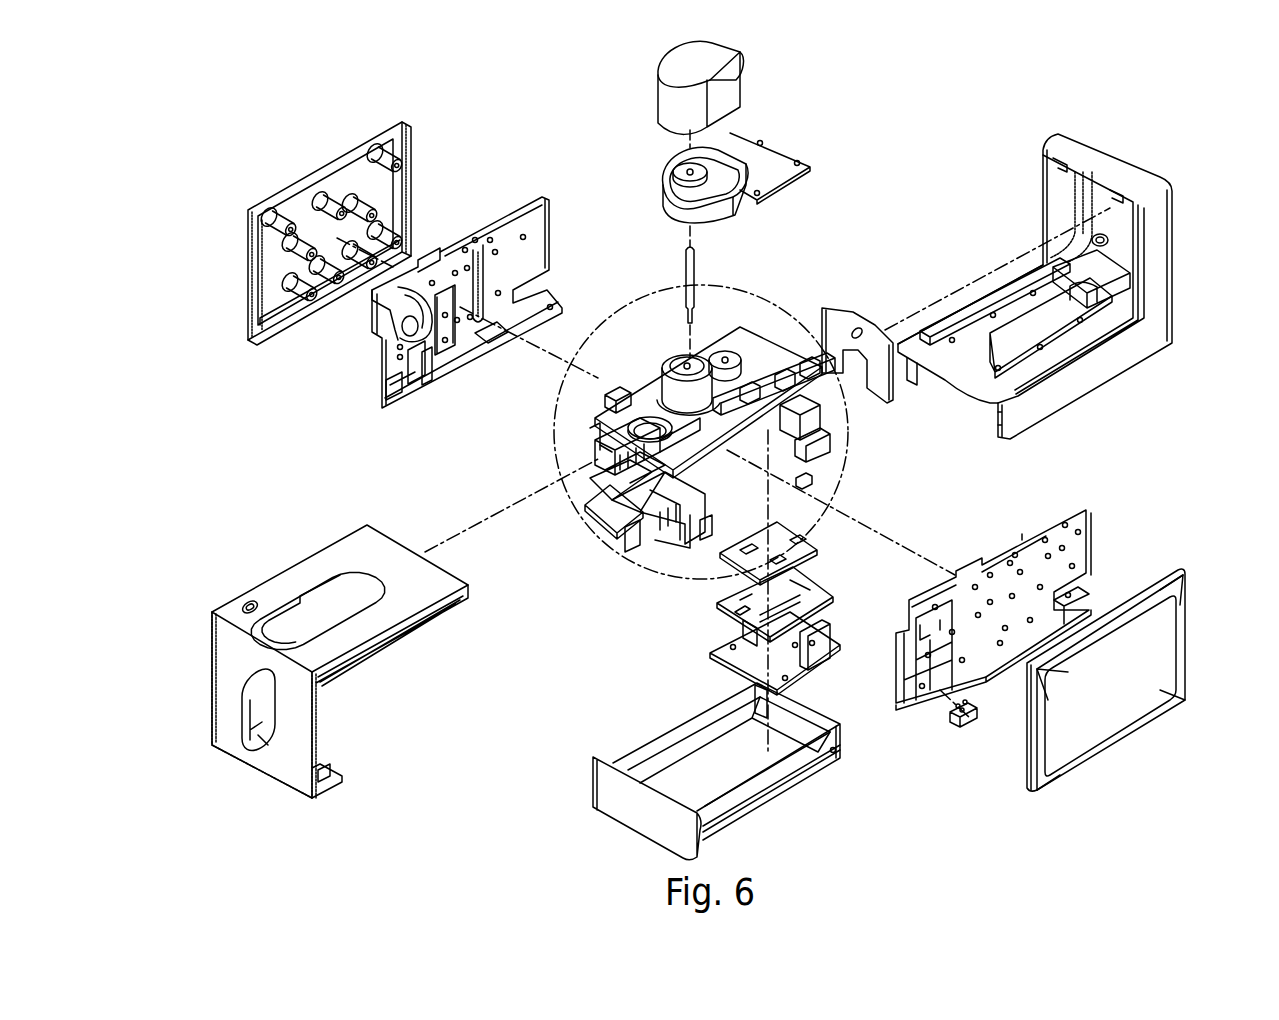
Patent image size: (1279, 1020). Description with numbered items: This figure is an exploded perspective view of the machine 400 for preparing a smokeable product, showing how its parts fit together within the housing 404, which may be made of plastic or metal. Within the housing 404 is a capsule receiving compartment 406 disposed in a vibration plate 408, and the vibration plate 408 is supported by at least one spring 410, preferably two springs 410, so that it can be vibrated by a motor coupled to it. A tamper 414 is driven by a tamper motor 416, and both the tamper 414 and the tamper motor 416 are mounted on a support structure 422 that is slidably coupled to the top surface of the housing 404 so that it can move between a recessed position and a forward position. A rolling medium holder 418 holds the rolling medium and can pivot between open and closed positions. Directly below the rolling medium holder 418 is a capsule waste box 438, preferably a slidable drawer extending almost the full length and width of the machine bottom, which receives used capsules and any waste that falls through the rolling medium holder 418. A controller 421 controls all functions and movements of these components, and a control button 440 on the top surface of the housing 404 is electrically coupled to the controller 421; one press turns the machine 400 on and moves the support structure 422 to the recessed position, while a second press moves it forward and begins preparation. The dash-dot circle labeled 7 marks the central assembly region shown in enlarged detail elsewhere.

The machine 400 is at (927, 72).
The housing 404 is at (1176, 238).
The capsule receiving compartment 406 is at (657, 385).
The vibration plate 408 is at (595, 441).
The spring 410 is at (613, 467).
The tamper 414 is at (695, 277).
The tamper motor 416 is at (740, 325).
The rolling medium holder 418 is at (585, 503).
The controller 421 is at (853, 660).
The support structure 422 is at (757, 45).
The capsule waste box 438 is at (630, 822).
The control button 440 is at (614, 389).
The detail view of FIG. 7 is at (790, 543).